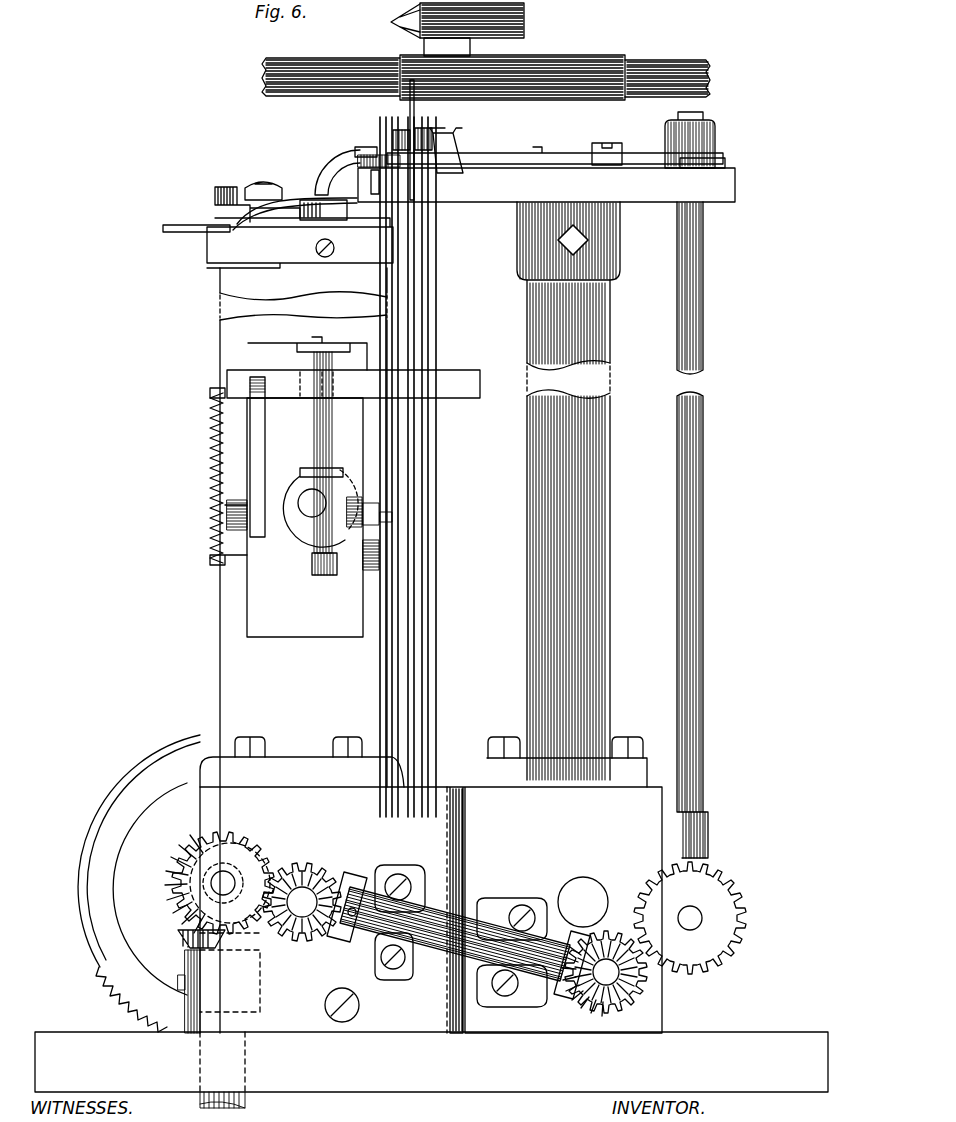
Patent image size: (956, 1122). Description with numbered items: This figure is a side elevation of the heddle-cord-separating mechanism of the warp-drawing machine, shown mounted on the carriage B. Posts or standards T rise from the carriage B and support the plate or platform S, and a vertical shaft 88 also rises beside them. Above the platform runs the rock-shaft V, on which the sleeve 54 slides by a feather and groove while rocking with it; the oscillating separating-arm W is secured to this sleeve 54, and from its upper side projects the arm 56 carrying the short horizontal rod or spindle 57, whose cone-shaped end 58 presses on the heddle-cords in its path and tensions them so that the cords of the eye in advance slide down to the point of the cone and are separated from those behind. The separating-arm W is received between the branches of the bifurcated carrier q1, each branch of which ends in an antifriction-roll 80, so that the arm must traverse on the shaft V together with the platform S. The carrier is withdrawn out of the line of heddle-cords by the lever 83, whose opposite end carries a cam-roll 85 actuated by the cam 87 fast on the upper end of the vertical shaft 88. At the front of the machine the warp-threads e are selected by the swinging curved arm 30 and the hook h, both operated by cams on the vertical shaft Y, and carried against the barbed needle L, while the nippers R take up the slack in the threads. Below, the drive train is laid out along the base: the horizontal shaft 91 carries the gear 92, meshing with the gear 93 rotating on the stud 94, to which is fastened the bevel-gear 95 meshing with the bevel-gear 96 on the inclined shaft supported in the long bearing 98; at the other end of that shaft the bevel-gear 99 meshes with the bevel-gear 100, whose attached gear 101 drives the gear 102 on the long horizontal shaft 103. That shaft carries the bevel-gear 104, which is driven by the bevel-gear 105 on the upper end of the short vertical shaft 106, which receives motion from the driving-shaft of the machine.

The horizontal rod or spindle 57 is at (525, 22).
The cone-shaped end 58 is at (398, 20).
The arm 56 is at (427, 43).
The sleeve 54 is at (572, 66).
The shaft V is at (665, 70).
The oscillating separating-arm W is at (408, 107).
The antifriction-roll 80 is at (396, 134).
The warp-threads e is at (438, 268).
The bifurcated carrier q1 is at (455, 143).
The swinging curved arm 30 is at (357, 148).
The barbed needle L is at (371, 176).
The vertical shaft Y is at (262, 183).
The hook h is at (310, 199).
The nippers R is at (353, 384).
The plate or platform S is at (546, 185).
The lever 83 is at (637, 157).
The cam-roll 85 is at (717, 148).
The cam 87 is at (726, 162).
The post or standard T is at (609, 321).
The vertical shaft 88 is at (703, 256).
The bevel-gear 104 is at (178, 870).
The bevel-gear 105 is at (178, 934).
The gear 102 is at (257, 820).
The long horizontal shaft 103 is at (227, 879).
The gear 101 is at (291, 866).
The bevel-gear 100 is at (314, 866).
The bevel-gear 99 is at (344, 882).
The long bearing 98 is at (471, 930).
The gear 93 is at (645, 997).
The bevel-gear 95 is at (598, 1014).
The stud 94 is at (607, 967).
The bevel-gear 96 is at (566, 988).
The gear 92 is at (741, 927).
The horizontal shaft 91 is at (695, 918).
The carriage B is at (431, 1062).
The short vertical shaft 106 is at (247, 1100).